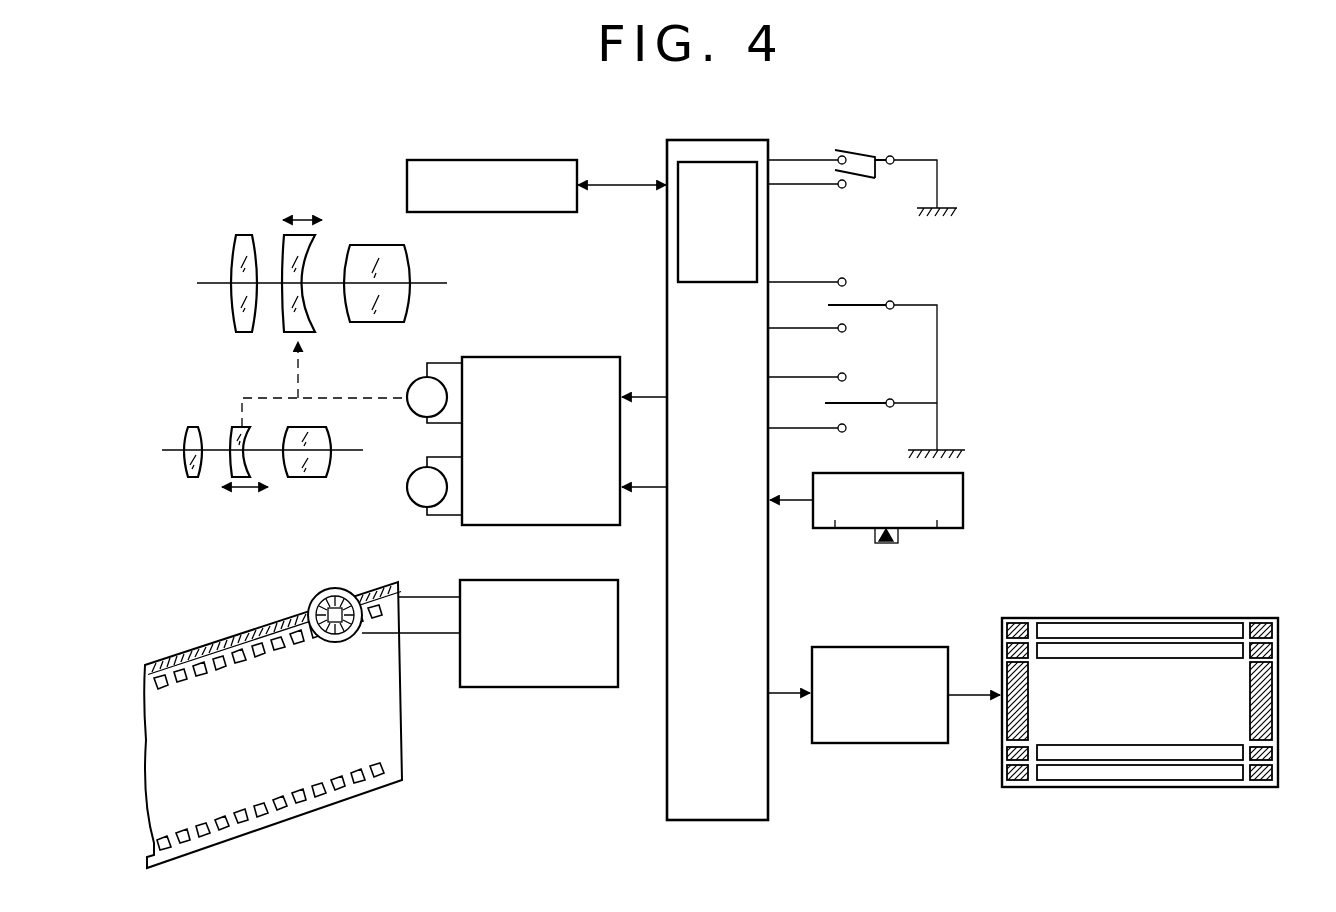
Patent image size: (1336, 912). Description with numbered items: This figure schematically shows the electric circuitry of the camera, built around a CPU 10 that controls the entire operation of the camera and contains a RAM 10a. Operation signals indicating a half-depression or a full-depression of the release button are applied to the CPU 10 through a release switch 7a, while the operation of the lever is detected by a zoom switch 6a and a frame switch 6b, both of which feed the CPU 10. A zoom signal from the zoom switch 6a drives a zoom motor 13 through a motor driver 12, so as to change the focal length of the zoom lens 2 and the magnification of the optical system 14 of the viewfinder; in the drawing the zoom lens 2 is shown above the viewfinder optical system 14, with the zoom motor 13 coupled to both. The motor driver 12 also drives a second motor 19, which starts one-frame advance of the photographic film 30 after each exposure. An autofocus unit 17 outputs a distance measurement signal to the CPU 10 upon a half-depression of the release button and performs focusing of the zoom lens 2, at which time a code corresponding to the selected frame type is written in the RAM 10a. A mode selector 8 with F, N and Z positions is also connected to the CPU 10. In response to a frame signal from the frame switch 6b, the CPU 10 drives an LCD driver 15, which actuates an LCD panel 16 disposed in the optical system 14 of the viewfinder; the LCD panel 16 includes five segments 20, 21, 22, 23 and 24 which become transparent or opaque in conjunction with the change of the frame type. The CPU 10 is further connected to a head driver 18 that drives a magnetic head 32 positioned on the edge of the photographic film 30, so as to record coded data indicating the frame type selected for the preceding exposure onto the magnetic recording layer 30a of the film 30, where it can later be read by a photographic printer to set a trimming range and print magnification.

The zoom lens 2 is at (210, 252).
The optical system of the viewfinder 14 is at (190, 487).
The autofocus unit 17 is at (407, 187).
The motor driver 12 is at (492, 357).
The zoom motor 13 is at (413, 383).
The motor 19 is at (413, 501).
The CPU 10 is at (708, 821).
The RAM 10a is at (678, 262).
The release switch 7a is at (859, 182).
The zoom switch 6a is at (866, 304).
The frame switch 6b is at (865, 402).
The mode selector switch 8 is at (875, 538).
The LCD driver 15 is at (858, 744).
The LCD panel 16 is at (1089, 614).
The segment 20 is at (1170, 630).
The segment 21 is at (1148, 655).
The segment 22 is at (1028, 700).
The segment 23 is at (1006, 648).
The segment 24 is at (1017, 620).
The head driver 18 is at (493, 688).
The magnetic head 32 is at (326, 590).
The photographic film 30 is at (145, 748).
The magnetic recording layer 30a is at (185, 657).